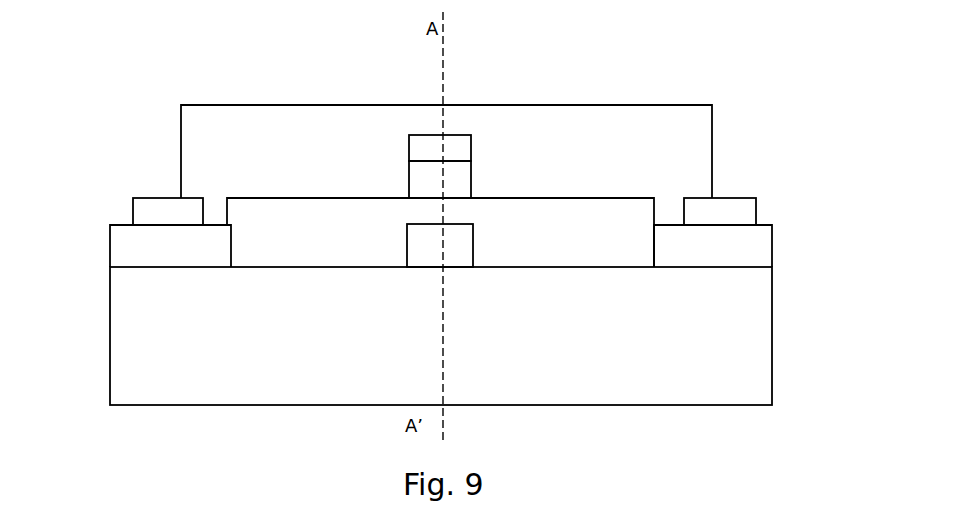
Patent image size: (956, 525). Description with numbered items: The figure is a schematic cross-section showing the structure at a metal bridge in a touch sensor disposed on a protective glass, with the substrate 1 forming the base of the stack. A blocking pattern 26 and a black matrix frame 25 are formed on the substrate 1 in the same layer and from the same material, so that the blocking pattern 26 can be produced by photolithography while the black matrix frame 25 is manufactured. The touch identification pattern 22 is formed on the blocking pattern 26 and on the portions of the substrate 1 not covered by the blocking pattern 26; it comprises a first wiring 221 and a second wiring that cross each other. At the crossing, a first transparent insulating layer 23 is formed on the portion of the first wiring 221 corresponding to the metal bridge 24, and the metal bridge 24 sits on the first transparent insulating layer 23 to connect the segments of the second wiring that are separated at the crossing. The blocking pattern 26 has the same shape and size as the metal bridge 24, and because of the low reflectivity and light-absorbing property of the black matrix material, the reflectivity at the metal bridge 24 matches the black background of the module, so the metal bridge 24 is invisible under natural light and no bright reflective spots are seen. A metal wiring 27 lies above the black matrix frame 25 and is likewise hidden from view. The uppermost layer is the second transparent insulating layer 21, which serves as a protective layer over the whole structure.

The substrate 1 is at (138, 336).
The second transparent insulating layer 21 is at (540, 130).
The touch identification pattern 22 is at (243, 197).
The first wiring 221 is at (293, 218).
The first transparent insulating layer 23 is at (452, 178).
The metal bridge 24 is at (457, 143).
The black matrix frame 25 is at (138, 247).
The blocking pattern 26 is at (462, 246).
The metal wiring 27 is at (151, 210).